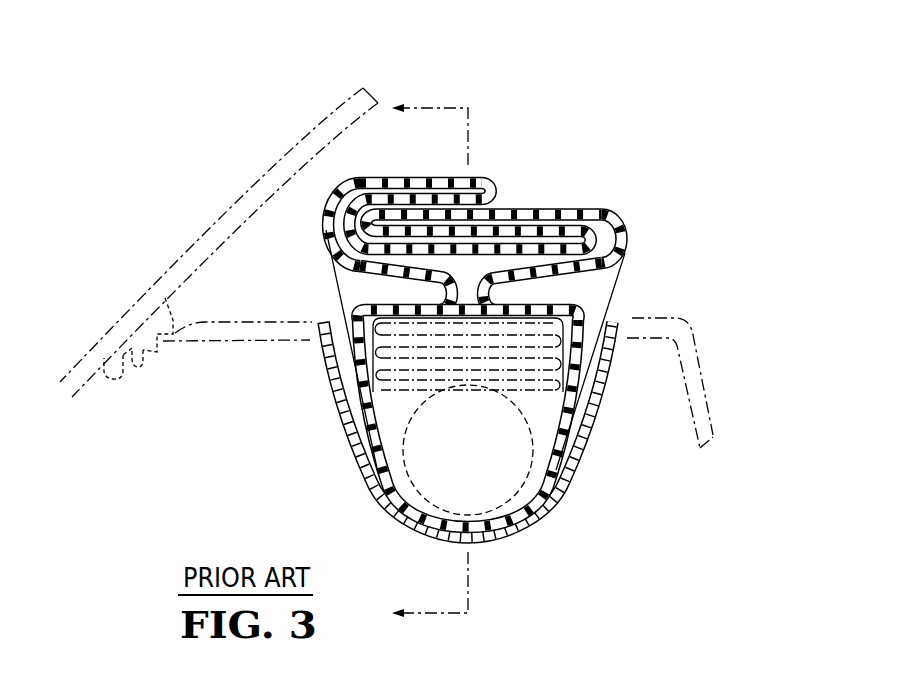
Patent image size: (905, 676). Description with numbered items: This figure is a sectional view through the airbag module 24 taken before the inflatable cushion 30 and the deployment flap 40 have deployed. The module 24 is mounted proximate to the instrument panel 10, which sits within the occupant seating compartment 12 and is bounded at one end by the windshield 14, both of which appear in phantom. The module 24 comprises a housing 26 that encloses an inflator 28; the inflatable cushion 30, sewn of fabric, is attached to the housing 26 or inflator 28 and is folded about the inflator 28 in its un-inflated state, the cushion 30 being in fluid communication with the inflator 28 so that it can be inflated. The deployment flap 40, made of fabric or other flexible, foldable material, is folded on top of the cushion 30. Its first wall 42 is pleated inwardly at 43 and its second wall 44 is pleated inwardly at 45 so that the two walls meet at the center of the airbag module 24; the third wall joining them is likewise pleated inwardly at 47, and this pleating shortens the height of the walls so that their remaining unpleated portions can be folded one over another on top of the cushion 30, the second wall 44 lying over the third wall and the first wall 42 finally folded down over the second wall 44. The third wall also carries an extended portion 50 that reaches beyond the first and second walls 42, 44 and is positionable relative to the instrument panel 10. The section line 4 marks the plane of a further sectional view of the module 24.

The section line 4- 4 is at (430, 361).
The instrument panel structure 10 is at (658, 309).
The occupant seating compartment 12 is at (758, 402).
The windshield 14 is at (334, 111).
The airbag module 24 is at (556, 505).
The housing 26 is at (357, 425).
The inflator 28 is at (380, 498).
The inflatable cushion 30 is at (323, 367).
The deployment flap 40 is at (590, 205).
The first wall 42 is at (326, 206).
The inward pleat of first wall 43 is at (443, 291).
The second wall 44 is at (614, 262).
The inward pleat of second wall 45 is at (490, 305).
The inward pleat of third wall 47 is at (520, 327).
The extended portion 50 is at (463, 243).